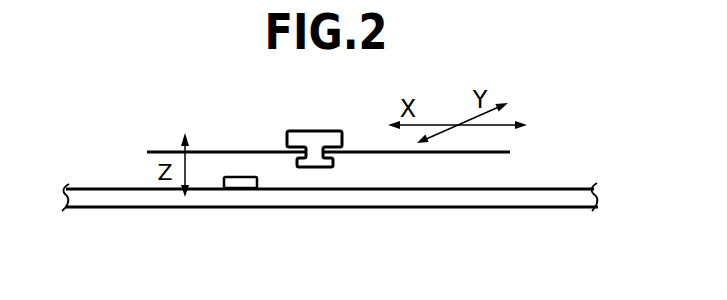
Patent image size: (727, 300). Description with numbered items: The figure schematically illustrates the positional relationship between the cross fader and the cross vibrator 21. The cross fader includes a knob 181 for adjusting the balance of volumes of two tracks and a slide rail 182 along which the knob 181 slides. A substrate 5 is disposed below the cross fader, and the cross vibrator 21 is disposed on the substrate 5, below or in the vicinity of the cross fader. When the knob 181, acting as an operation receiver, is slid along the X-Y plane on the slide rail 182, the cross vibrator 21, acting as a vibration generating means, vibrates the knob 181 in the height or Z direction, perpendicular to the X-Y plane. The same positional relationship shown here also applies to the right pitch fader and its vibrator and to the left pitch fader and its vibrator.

The substrate 5 is at (443, 207).
The cross vibrator 21 is at (247, 190).
The knob 181 is at (323, 128).
The slide rail 182 is at (250, 152).